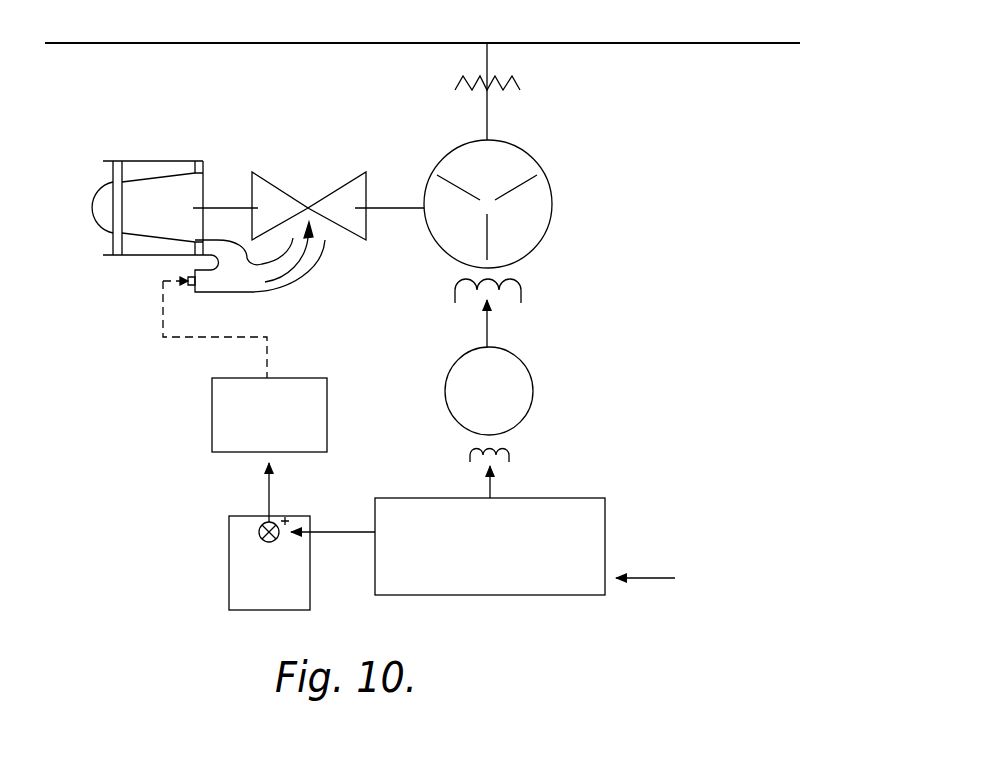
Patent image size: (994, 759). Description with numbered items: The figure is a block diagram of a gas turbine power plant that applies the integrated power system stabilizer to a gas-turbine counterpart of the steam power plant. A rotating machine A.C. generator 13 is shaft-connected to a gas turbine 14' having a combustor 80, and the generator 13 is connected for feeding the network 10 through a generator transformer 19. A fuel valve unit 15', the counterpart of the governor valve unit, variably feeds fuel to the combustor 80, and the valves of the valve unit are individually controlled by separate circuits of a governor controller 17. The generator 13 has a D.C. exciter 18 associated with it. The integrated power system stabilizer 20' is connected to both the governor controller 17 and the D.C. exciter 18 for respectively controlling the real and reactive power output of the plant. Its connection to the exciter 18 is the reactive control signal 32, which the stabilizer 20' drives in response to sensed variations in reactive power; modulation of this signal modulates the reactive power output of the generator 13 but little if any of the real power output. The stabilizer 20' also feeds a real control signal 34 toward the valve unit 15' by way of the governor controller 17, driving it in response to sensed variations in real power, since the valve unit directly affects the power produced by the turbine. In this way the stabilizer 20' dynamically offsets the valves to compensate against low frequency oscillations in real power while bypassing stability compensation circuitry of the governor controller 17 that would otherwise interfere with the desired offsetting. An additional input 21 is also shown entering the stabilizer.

The network 10 is at (398, 43).
The generator transformer 19 is at (455, 89).
The rotating machine A.C. generator 13 is at (515, 145).
The gas turbine 14' is at (320, 190).
The combustor 80 is at (225, 293).
The D.C. exciter 18 is at (527, 365).
The reactive control signal 32 is at (488, 476).
The integrated power system stabilizer (IPSS) 20' is at (490, 546).
The input signal 21 is at (637, 578).
The real control signal 34 is at (360, 530).
The governor controller 17 is at (272, 610).
The fuel valve unit 15' is at (234, 450).